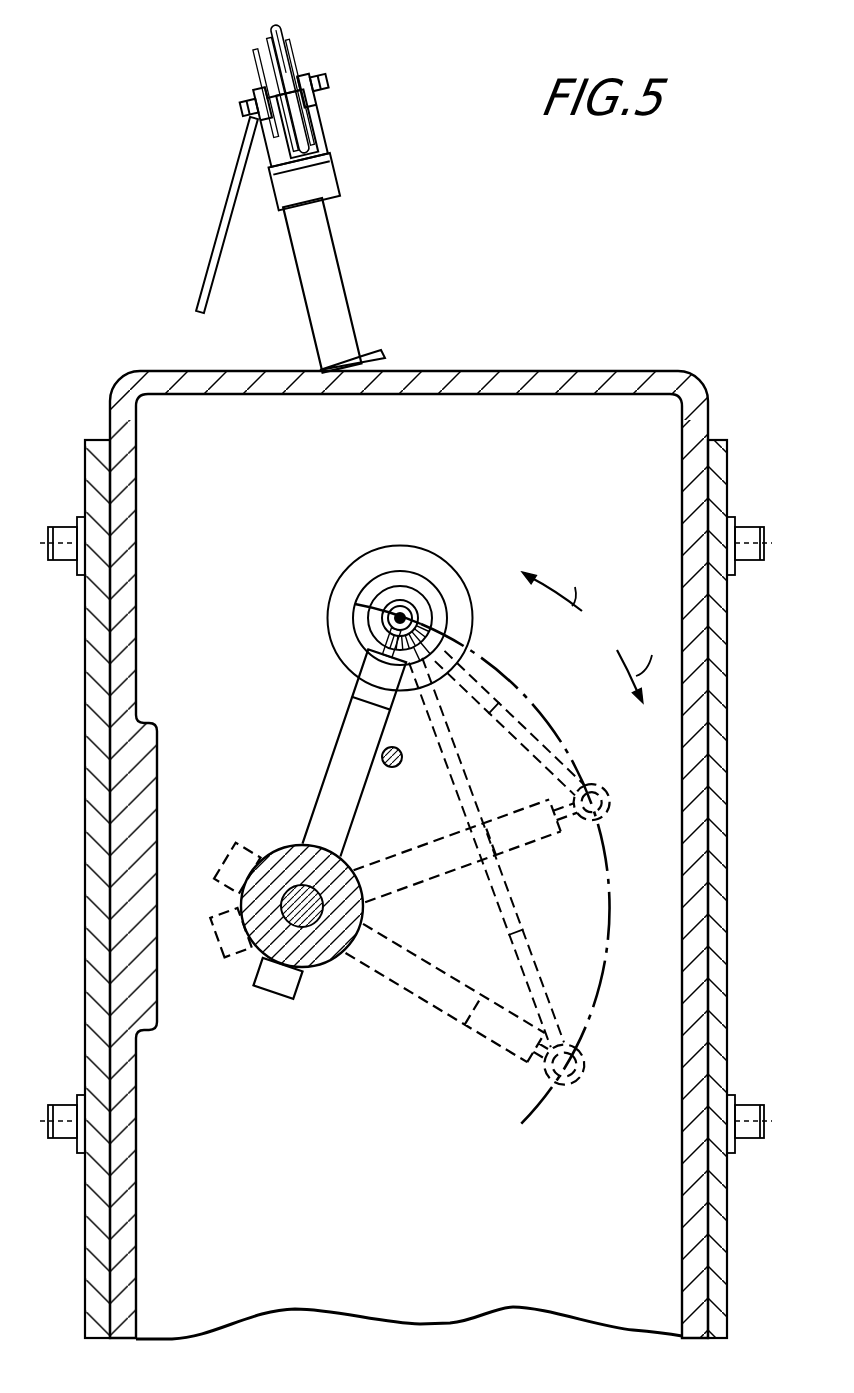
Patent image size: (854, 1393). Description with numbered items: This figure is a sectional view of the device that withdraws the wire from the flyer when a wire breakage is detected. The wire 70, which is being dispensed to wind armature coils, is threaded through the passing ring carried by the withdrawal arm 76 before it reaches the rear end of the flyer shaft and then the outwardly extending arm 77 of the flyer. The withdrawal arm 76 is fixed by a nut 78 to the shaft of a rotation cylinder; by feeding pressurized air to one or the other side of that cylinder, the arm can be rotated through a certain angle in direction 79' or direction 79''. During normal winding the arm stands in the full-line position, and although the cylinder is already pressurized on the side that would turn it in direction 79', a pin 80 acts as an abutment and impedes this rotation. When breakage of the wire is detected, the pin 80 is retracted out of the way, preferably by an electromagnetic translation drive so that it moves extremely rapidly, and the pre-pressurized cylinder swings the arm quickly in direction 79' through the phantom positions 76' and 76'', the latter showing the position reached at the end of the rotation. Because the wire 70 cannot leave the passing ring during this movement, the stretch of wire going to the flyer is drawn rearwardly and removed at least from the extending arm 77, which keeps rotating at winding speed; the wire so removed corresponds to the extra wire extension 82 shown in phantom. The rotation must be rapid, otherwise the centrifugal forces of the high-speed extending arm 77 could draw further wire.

The wire 70 is at (222, 219).
The withdrawal arm 76 is at (358, 754).
The phantom representation of withdrawal arm 76' is at (412, 866).
The phantom representation of withdrawal arm 76'' is at (403, 968).
The outwardly extending arm 77 is at (338, 262).
The nut 78 is at (287, 43).
The direction of rotation 79' is at (635, 660).
The direction of rotation 79'' is at (552, 580).
The pin 80 is at (397, 767).
The extra wire extension 82 is at (521, 691).